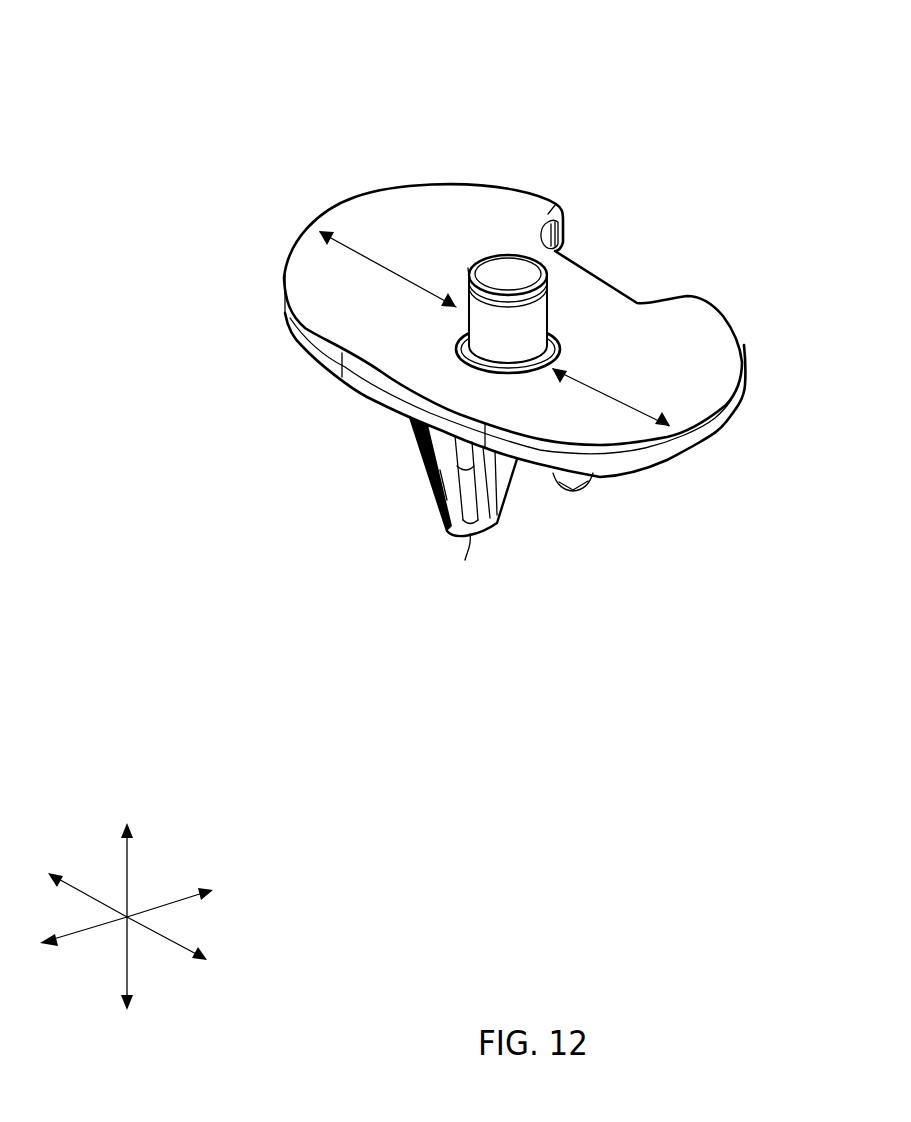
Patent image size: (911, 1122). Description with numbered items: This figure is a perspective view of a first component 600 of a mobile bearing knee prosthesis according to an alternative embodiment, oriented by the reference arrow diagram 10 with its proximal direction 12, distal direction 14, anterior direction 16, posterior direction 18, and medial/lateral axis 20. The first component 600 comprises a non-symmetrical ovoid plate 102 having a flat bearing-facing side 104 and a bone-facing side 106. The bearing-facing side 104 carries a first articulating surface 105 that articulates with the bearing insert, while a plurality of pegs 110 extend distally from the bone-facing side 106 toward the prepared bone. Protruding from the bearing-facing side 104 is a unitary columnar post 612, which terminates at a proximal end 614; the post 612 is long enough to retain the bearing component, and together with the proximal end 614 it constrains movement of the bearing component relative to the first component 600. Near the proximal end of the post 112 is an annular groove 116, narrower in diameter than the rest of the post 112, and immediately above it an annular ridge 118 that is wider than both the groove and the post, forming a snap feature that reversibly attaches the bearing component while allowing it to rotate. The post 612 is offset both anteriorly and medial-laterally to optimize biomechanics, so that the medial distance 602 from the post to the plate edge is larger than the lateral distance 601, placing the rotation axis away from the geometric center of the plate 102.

The first component 600 is at (538, 301).
The medial distance 602 is at (350, 247).
The lateral distance 601 is at (653, 393).
The non-symmetrical ovoid plate 102 is at (697, 438).
The bearing-facing side 104 is at (702, 368).
The bone-facing side 106 is at (680, 457).
The first articulating surface 105 is at (438, 384).
The pegs 110 is at (557, 477).
The post 112 is at (582, 252).
The annular groove 116 is at (468, 268).
The annular ridge 118 is at (468, 268).
The unitary columnar post 612 is at (468, 338).
The proximal end 614 is at (496, 268).
The reference arrow diagram 10 is at (135, 860).
The proximal direction 12 is at (130, 864).
The distal direction 14 is at (127, 967).
The anterior direction 16 is at (83, 933).
The posterior direction 18 is at (183, 890).
The medial/lateral axis 20 is at (90, 892).